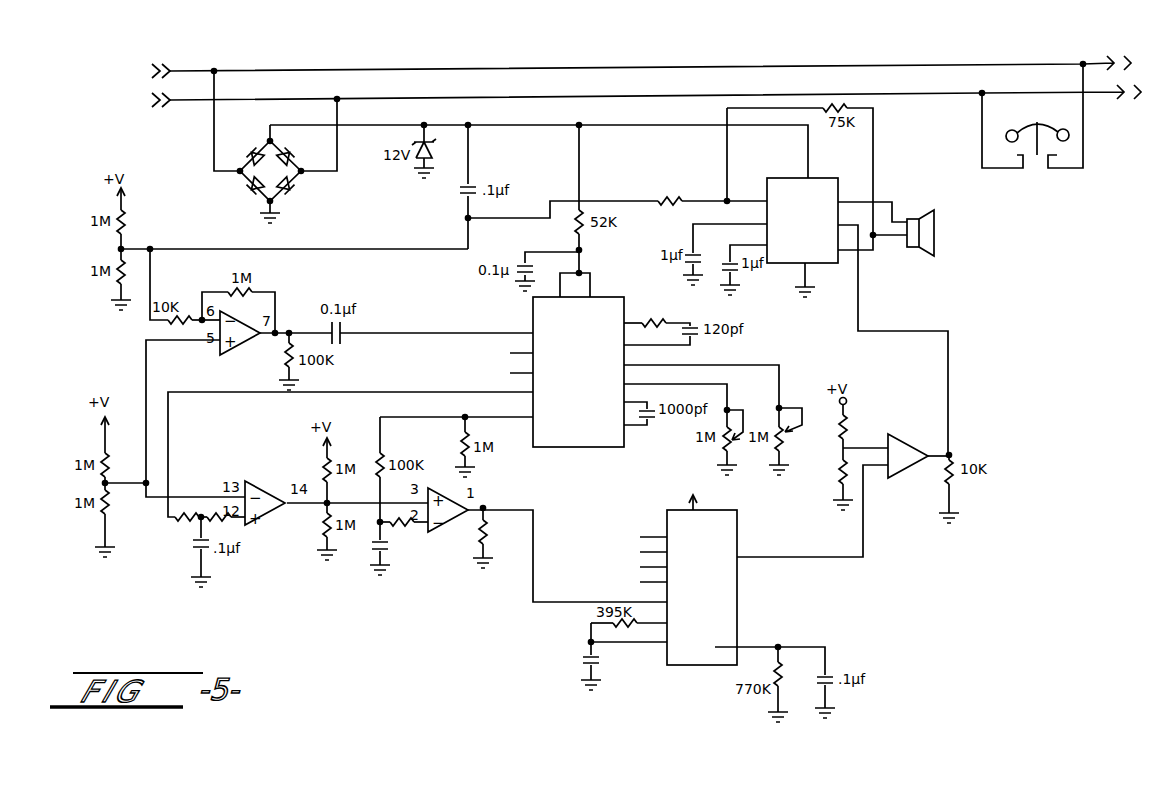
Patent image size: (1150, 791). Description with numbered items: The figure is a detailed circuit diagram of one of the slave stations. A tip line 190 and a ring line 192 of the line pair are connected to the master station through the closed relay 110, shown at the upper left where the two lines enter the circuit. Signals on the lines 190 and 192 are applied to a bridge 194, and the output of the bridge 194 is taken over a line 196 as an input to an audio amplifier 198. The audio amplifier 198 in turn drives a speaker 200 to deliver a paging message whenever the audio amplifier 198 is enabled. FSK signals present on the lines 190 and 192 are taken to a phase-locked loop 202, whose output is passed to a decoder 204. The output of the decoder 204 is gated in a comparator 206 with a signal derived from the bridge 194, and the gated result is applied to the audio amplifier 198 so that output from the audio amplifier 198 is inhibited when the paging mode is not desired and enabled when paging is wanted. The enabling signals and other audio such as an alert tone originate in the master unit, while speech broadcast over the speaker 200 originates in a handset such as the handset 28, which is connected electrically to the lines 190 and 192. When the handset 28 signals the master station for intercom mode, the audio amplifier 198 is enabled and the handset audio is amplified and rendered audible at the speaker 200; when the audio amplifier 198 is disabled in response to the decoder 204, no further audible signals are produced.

The handset 28 is at (1050, 120).
The closed relay 110 is at (132, 79).
The tip line 190 is at (455, 70).
The ring line 192 is at (508, 99).
The bridge 194 is at (305, 175).
The line 196 is at (713, 203).
The audio amplifier 198 is at (833, 263).
The speaker 200 is at (936, 226).
The phase-locked loop 202 is at (620, 447).
The decoder 204 is at (737, 583).
The comparator 206 is at (906, 478).